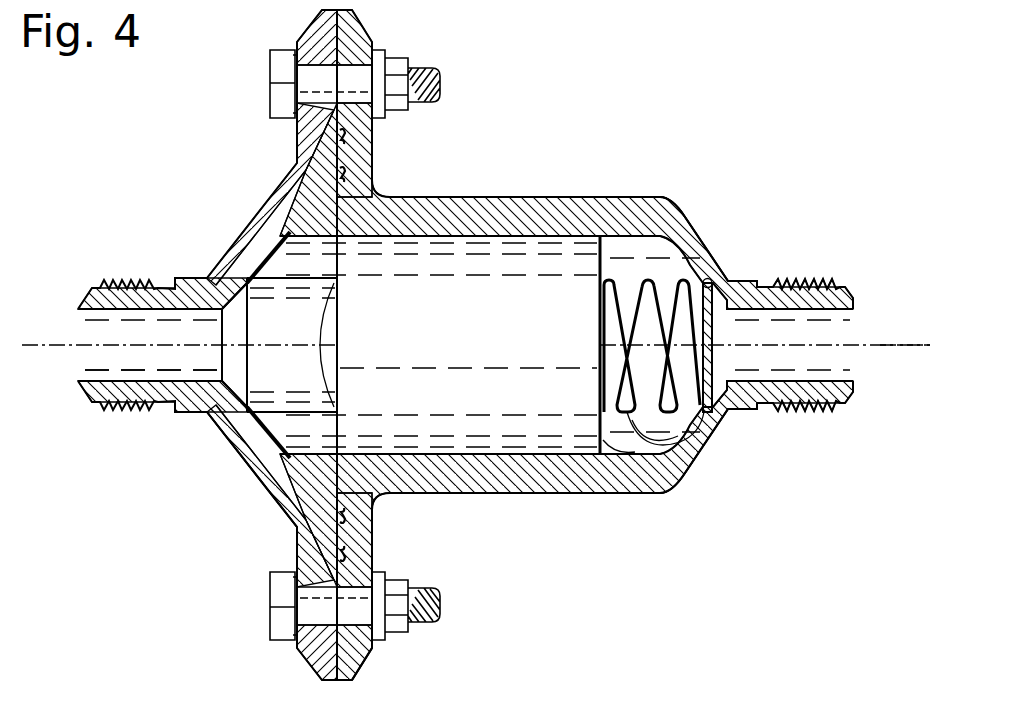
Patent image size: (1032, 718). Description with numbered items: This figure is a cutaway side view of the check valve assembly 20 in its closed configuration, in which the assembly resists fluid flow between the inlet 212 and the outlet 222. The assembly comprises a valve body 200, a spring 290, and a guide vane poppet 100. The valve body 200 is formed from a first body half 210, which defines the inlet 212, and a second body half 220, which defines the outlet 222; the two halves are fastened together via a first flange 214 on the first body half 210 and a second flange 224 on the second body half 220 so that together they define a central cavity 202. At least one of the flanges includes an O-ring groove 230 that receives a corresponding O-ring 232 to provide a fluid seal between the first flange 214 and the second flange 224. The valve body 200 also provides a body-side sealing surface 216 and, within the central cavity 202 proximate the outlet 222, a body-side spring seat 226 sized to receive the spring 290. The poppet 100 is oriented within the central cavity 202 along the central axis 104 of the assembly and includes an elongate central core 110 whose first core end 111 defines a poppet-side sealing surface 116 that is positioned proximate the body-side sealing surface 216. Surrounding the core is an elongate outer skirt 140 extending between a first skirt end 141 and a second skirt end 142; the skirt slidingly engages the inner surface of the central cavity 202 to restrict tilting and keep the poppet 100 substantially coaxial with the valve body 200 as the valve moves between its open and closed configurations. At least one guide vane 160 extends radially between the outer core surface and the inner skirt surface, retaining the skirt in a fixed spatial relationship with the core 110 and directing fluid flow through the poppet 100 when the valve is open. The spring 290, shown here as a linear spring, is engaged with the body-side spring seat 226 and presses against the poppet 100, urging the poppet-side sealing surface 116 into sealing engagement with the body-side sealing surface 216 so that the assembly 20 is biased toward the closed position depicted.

The check valve assembly 20 is at (134, 113).
The guide vane poppet 100 is at (254, 239).
The central axis 104 is at (900, 350).
The elongate central core 110 is at (276, 463).
The first core end 111 is at (226, 351).
The poppet-side sealing surface 116 is at (291, 416).
The elongate outer skirt 140 is at (606, 268).
The first skirt end 141 is at (331, 306).
The second skirt end 142 is at (612, 443).
The guide vane 160 is at (334, 290).
The valve body 200 is at (521, 194).
The central cavity 202 is at (283, 262).
The first body half 210 is at (221, 249).
The inlet 212 is at (100, 357).
The first flange 214 is at (312, 663).
The body-side sealing surface 216 is at (247, 290).
The second body half 220 is at (713, 236).
The outlet 222 is at (832, 336).
The second flange 224 is at (366, 659).
The body-side spring seat 226 is at (706, 284).
The O-ring groove 230 is at (346, 176).
The O-ring 232 is at (346, 549).
The spring 290 is at (688, 433).